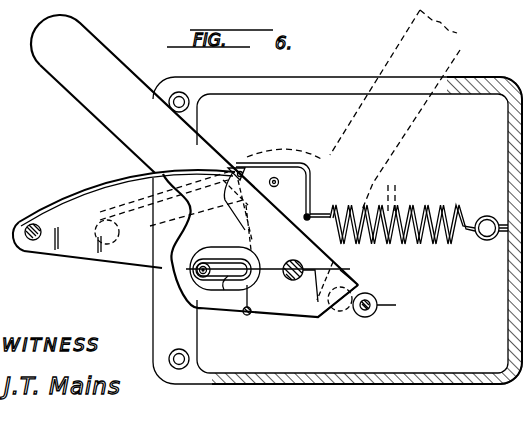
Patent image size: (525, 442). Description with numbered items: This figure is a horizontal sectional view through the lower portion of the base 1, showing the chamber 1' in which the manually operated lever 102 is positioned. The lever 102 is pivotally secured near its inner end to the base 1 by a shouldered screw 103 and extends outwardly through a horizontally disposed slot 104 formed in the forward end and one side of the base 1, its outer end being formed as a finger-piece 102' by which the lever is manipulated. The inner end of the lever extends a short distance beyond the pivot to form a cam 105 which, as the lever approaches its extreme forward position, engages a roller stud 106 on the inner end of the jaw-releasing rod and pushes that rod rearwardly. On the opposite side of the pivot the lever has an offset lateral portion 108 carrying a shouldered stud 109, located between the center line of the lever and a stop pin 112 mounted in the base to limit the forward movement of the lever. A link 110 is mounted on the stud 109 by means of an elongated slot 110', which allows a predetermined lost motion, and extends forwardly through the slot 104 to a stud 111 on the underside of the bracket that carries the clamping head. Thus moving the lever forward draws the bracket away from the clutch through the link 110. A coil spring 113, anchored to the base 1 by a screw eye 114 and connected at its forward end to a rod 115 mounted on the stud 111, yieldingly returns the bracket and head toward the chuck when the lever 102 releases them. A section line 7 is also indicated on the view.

The base 1 is at (337, 252).
The chamber 1' is at (367, 210).
The section line 7- 7 is at (323, 172).
The lever 102 is at (235, 151).
The finger-piece 102' is at (183, 150).
The shouldered screw 103 is at (294, 283).
The slot 104 is at (338, 78).
The cam 105 is at (370, 290).
The roller stud 106 is at (367, 318).
The lateral portion 108 is at (198, 300).
The shouldered stud 109 is at (196, 274).
The link 110 is at (112, 258).
The elongated slot 110' is at (225, 292).
The stud 111 is at (37, 246).
The stop pin 112 is at (290, 338).
The coil spring 113 is at (432, 211).
The screw eye 114 is at (487, 242).
The rod 115 is at (93, 182).